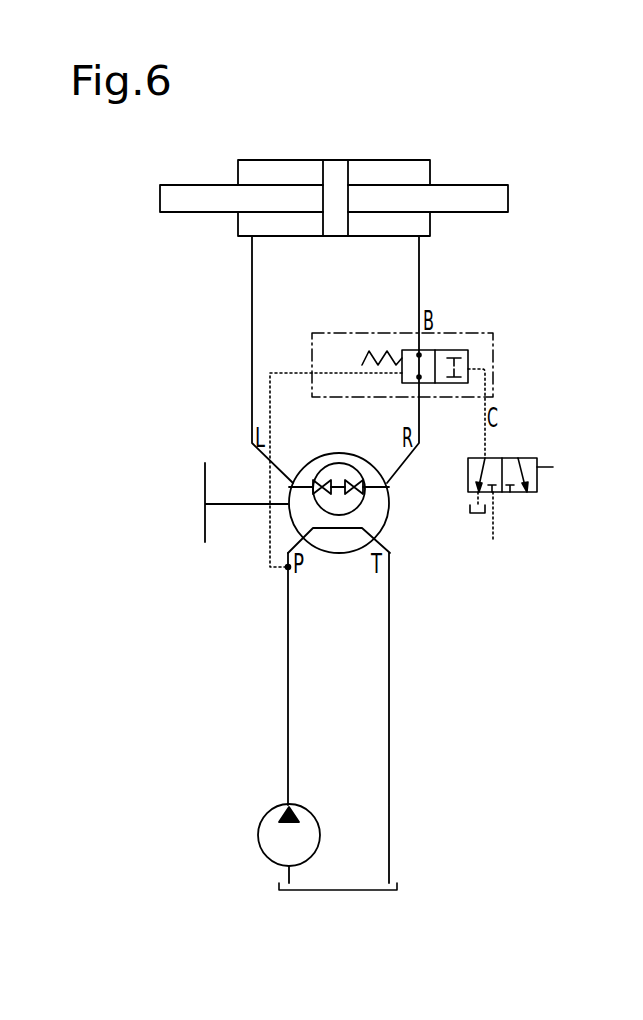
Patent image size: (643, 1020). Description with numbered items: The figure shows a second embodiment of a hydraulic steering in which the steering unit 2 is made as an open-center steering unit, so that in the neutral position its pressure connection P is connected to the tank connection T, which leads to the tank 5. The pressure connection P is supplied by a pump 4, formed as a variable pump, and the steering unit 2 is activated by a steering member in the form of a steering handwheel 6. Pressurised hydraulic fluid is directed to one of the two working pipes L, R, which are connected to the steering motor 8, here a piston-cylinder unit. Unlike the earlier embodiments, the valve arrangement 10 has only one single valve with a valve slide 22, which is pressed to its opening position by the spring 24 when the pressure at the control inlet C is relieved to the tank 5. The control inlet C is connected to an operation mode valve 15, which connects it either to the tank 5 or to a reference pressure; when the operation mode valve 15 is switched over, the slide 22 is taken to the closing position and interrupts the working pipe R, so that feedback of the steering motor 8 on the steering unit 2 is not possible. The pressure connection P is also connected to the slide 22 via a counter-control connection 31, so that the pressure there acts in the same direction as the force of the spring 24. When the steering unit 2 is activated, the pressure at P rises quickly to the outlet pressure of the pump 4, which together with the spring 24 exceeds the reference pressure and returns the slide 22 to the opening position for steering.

The steering motor 8 is at (404, 170).
The valve arrangement 10 is at (494, 350).
The spring 24 is at (362, 364).
The valve slide 22 is at (452, 347).
The counter-control connection 31 is at (270, 402).
The steering unit 2 is at (290, 525).
The steering handwheel 6 is at (203, 478).
The operation mode valve 15 is at (525, 510).
The pump 4 is at (258, 846).
The tank 5 is at (469, 520).